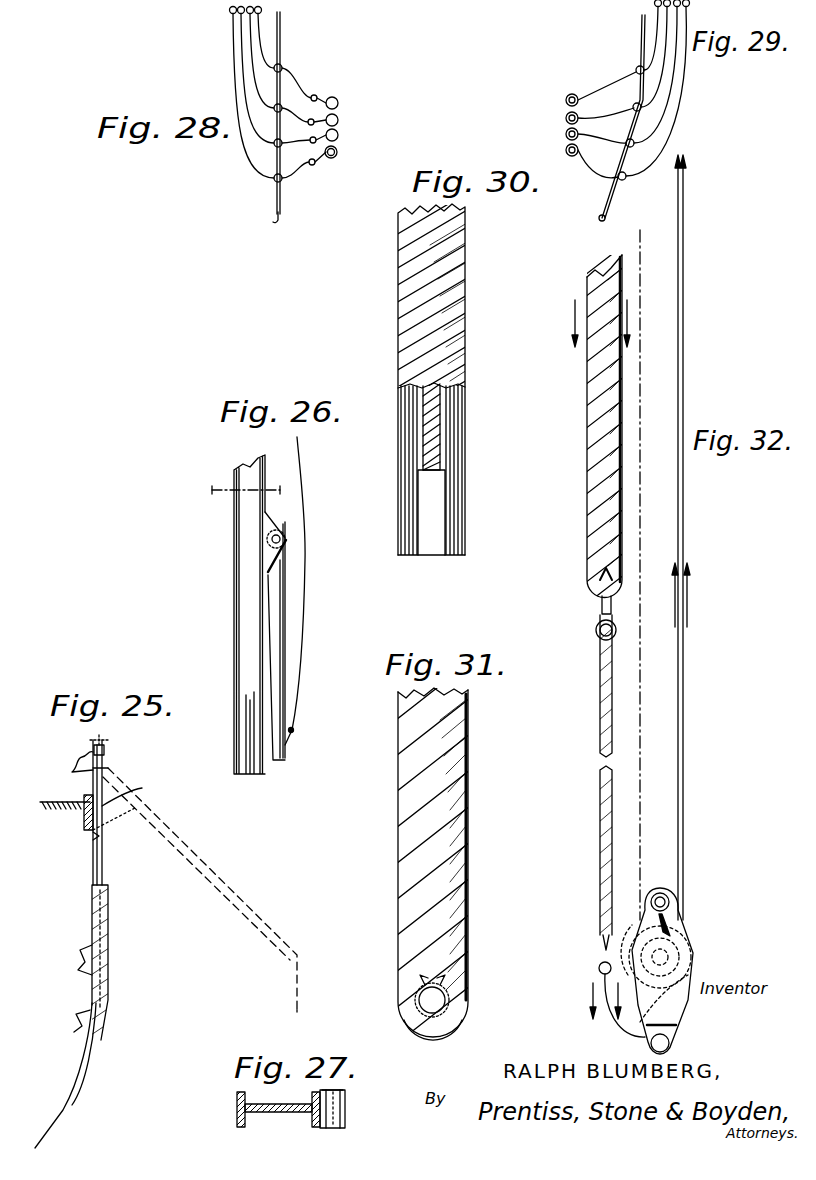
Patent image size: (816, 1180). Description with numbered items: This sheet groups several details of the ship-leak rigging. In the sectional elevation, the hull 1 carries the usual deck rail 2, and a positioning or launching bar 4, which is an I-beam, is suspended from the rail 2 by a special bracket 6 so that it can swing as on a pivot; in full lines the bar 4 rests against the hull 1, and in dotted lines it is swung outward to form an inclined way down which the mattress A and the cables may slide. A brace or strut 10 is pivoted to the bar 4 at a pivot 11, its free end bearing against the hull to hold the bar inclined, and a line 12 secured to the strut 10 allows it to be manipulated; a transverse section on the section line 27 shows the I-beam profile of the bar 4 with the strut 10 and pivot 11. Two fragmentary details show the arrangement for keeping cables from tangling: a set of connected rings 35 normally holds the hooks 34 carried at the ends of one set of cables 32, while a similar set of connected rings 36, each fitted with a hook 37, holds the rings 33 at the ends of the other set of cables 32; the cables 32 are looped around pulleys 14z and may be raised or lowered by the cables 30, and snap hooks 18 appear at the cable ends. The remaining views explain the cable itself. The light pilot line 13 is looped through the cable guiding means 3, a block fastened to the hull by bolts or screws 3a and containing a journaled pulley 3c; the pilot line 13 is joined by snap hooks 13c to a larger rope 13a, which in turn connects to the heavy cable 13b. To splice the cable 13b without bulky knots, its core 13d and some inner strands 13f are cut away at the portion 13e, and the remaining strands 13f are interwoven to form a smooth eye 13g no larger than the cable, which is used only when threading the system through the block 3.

In FIG. 25, the hull 1 is at (70, 1112).
In FIG. 25, the rail 2 is at (108, 768).
In FIG. 32, the cable guiding means (pulley block) 3 is at (678, 971).
In FIG. 32, the bolts or screws 3a is at (668, 904).
In FIG. 32, the pulley 3c is at (690, 955).
In FIG. 26, the positioning or launching bars 4 is at (240, 570).
In FIG. 25, the positioning or launching bars 4 is at (231, 911).
In FIG. 27, the positioning or launching bars 4 is at (272, 1114).
In FIG. 25, the special brackets 6 is at (107, 744).
In FIG. 26, the brace or strut 10 is at (280, 632).
In FIG. 25, the brace or strut 10 is at (93, 866).
In FIG. 27, the brace or strut 10 is at (346, 1110).
In FIG. 26, the pivot 11 is at (284, 541).
In FIG. 25, the pivot 11 is at (93, 837).
In FIG. 27, the pivot 11 is at (338, 1090).
In FIG. 26, the line 12 is at (304, 593).
In FIG. 32, the pilot line 13 is at (684, 732).
In FIG. 32, the rope 13a is at (600, 827).
In FIG. 30, the cable 13b is at (466, 249).
In FIG. 31, the cable 13b is at (468, 787).
In FIG. 32, the cable 13b is at (582, 367).
In FIG. 32, the snap hooks 13c is at (600, 617).
In FIG. 30, the core 13d is at (440, 432).
In FIG. 30, the cut-away portion 13e is at (433, 494).
In FIG. 30, the strands 13f is at (458, 521).
In FIG. 31, the eye 13g is at (462, 1009).
In FIG. 28, the pulleys 14z is at (283, 67).
In FIG. 29, the pulleys 14z is at (637, 72).
In FIG. 28, the snap hooks 18 is at (272, 222).
In FIG. 29, the snap hooks 18 is at (598, 219).
In FIG. 26, the section line 27 is at (241, 490).
In FIG. 28, the cables 30 is at (282, 47).
In FIG. 29, the cables 30 is at (641, 28).
In FIG. 28, the cables 32 is at (292, 85).
In FIG. 29, the cables 32 is at (613, 118).
In FIG. 28, the rings 33 is at (318, 96).
In FIG. 29, the hooks 34 is at (576, 94).
In FIG. 28, the set of connected rings 35 is at (229, 10).
In FIG. 29, the set of connected rings 35 is at (690, 5).
In FIG. 28, the set of connected rings 36 is at (339, 119).
In FIG. 28, the hook 37 is at (307, 130).
In FIG. 25, the mattress A is at (292, 988).